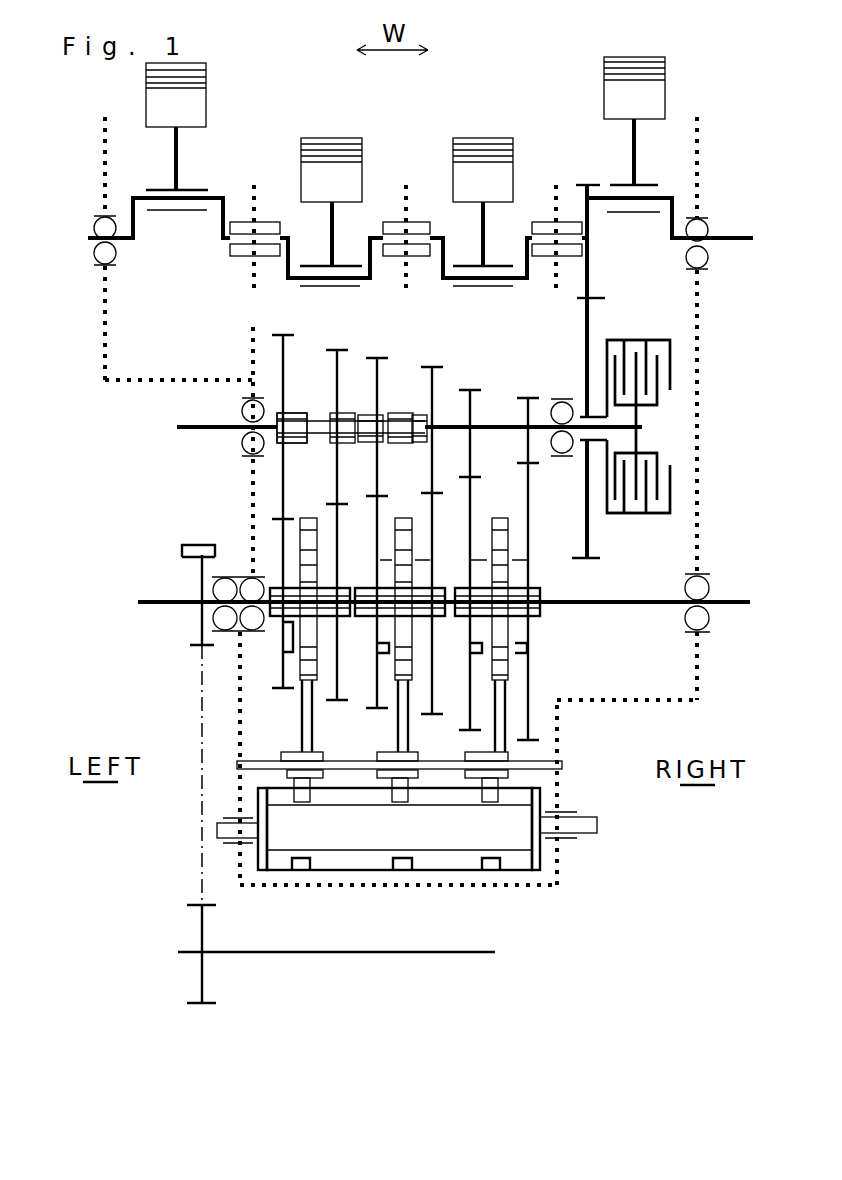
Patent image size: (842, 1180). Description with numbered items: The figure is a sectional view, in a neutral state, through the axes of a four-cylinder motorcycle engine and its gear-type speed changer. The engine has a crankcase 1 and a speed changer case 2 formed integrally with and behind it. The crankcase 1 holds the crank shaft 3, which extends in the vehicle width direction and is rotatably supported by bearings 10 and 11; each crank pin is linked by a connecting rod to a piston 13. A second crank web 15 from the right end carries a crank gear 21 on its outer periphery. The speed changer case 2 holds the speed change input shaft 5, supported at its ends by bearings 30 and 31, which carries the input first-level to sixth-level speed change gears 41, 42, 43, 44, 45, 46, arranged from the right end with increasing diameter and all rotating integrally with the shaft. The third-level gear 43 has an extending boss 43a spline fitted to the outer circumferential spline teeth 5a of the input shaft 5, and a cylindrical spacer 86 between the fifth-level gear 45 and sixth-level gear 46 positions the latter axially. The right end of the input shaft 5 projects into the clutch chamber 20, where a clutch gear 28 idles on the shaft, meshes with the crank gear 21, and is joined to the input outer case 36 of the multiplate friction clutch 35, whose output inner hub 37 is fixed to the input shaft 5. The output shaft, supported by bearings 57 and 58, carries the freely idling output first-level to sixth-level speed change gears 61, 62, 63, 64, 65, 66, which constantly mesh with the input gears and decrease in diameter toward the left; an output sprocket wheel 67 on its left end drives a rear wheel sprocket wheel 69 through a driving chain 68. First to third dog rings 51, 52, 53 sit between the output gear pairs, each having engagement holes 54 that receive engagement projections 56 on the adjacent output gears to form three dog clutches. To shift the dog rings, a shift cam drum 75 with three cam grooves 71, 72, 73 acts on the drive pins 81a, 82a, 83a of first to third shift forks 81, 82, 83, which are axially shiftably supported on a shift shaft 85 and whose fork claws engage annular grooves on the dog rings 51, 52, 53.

The crankcase 1 is at (700, 150).
The speed changer case 2 is at (700, 678).
The crank shaft 3 is at (742, 243).
The speed change input shaft 5 is at (236, 425).
The outer circumferential spline teeth 5a is at (357, 418).
The bearing 10 is at (105, 228).
The bearing 11 is at (245, 226).
The piston 13 is at (192, 107).
The second crank web 15 is at (590, 270).
The clutch chamber 20 is at (660, 557).
The crank gear 21 is at (595, 183).
The clutch gear 28 is at (586, 304).
The bearing 30 is at (250, 410).
The bearing 31 is at (563, 402).
The multiplate friction clutch 35 is at (672, 393).
The input outer case 36 is at (633, 340).
The output inner hub 37 is at (640, 450).
The first-level speed change gear 41 is at (528, 398).
The second-level speed change gear 42 is at (470, 390).
The third-level speed change gear 43 is at (432, 367).
The extending boss 43a is at (408, 426).
The fourth-level speed change gear 44 is at (377, 358).
The fifth-level speed change gear 45 is at (337, 350).
The sixth-level speed change gear 46 is at (283, 335).
The first dog ring 51 is at (497, 520).
The second dog ring 52 is at (405, 520).
The third dog ring 53 is at (312, 520).
The engagement hole 54 is at (313, 648).
The engagement projection 56 is at (292, 648).
The bearing 57 is at (228, 622).
The bearing 58 is at (695, 618).
The first-level speed change gear 61 is at (532, 468).
The second-level speed change gear 62 is at (477, 483).
The third-level speed change gear 63 is at (433, 500).
The fourth-level speed change gear 64 is at (372, 512).
The fifth-level speed change gear 65 is at (337, 520).
The sixth-level speed change gear 66 is at (268, 522).
The output sprocket wheel 67 is at (200, 632).
The driving chain 68 is at (200, 818).
The rear wheel sprocket wheel 69 is at (200, 958).
The cam groove 71 is at (490, 870).
The cam groove 72 is at (402, 870).
The cam groove 73 is at (300, 870).
The shift cam drum 75 is at (520, 860).
The first shift fork 81 is at (495, 745).
The drive pin 81a is at (490, 792).
The second shift fork 82 is at (400, 742).
The drive pin 82a is at (400, 796).
The third shift fork 83 is at (305, 740).
The drive pin 83a is at (300, 792).
The shift shaft 85 is at (540, 767).
The cylindrical spacer 86 is at (305, 412).